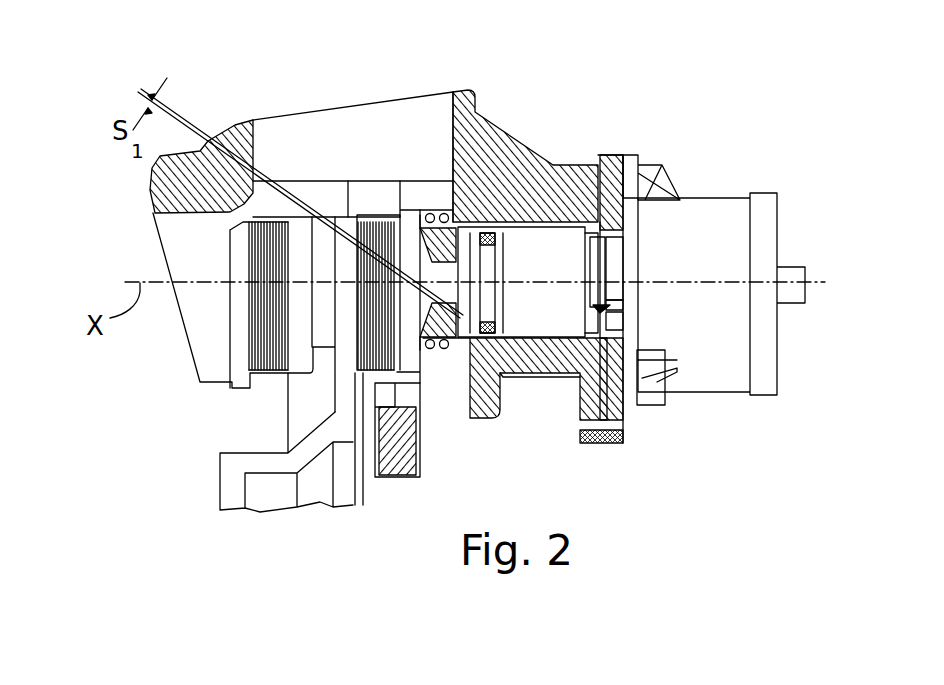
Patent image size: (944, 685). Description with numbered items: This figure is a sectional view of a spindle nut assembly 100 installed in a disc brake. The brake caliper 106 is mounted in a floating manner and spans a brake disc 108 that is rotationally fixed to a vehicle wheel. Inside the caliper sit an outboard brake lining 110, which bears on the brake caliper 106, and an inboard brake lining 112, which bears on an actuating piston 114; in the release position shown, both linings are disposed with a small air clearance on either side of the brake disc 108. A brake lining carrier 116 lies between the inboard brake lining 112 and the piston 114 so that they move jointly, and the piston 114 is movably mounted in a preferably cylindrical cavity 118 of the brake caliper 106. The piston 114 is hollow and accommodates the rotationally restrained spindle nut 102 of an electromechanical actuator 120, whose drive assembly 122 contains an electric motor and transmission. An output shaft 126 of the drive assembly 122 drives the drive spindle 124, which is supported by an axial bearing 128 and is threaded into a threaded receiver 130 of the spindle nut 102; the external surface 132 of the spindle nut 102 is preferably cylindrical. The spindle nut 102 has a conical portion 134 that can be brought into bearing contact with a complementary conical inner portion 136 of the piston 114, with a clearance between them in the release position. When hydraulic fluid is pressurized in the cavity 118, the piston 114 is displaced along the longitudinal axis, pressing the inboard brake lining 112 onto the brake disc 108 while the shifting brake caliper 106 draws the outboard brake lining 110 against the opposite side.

The spindle nut assembly 100 is at (660, 124).
The spindle nut 102 is at (580, 260).
The brake caliper 106 is at (275, 135).
The brake disc 108 is at (297, 403).
The outboard brake lining 110 is at (250, 260).
The inboard brake lining 112 is at (373, 217).
The actuating piston 114 is at (507, 205).
The brake lining carrier 116 is at (377, 210).
The cylindrical cavity 118 is at (600, 190).
The electromechanical actuator 120 is at (713, 191).
The drive assembly 122 is at (708, 377).
The drive spindle 124 is at (628, 303).
The output shaft 126 is at (623, 277).
The axial bearing 128 is at (660, 193).
The threaded receiver 130 is at (570, 298).
The external surface 132 is at (620, 320).
The conical portion 134 is at (424, 212).
The conical inner portion 136 is at (410, 212).